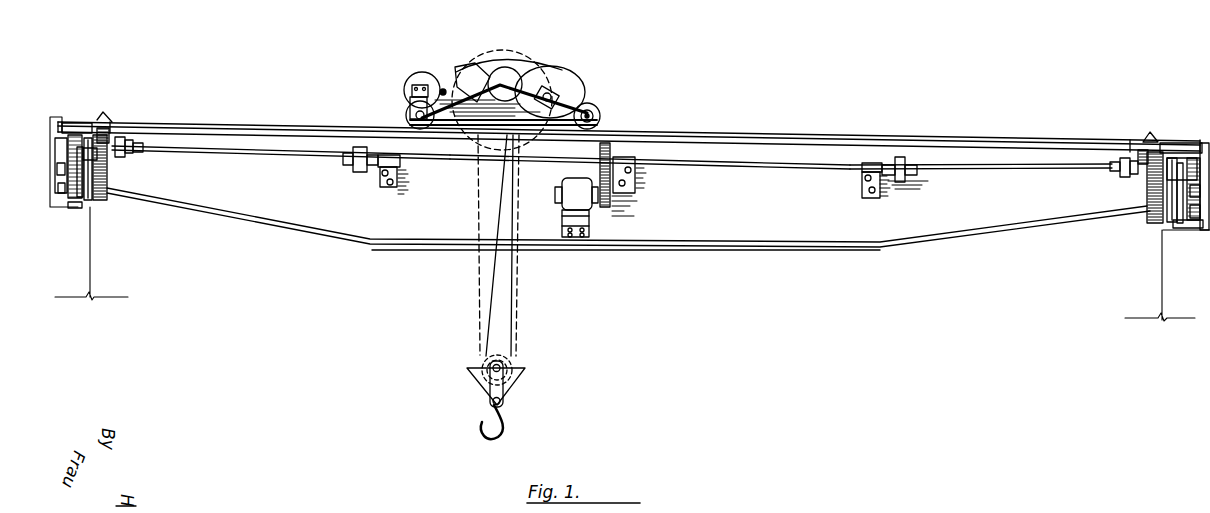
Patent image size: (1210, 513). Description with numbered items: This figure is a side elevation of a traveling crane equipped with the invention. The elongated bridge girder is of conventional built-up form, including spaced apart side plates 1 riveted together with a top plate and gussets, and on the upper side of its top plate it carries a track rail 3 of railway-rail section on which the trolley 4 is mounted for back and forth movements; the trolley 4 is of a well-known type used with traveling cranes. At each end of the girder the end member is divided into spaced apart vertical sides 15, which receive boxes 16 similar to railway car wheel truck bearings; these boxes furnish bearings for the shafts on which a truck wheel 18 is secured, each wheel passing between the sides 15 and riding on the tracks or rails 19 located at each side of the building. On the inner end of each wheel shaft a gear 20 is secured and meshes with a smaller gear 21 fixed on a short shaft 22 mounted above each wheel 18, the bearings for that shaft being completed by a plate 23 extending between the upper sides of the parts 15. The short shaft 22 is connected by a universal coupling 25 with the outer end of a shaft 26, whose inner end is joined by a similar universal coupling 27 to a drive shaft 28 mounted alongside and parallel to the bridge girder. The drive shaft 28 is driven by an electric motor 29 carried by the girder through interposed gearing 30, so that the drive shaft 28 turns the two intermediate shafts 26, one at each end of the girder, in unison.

The side plates 1 is at (702, 233).
The track rail 3 is at (673, 134).
The trolley 4 is at (523, 97).
The vertical sides 15 is at (88, 155).
The boxes 16 is at (88, 193).
The truck wheel 18 is at (83, 198).
The tracks or rails 19 is at (72, 208).
The gear 20 is at (97, 200).
The smaller gear 21 is at (97, 130).
The short shaft 22 is at (110, 132).
The plate 23 is at (80, 132).
The universal coupling 25 is at (132, 150).
The shaft 26 is at (250, 156).
The universal coupling 27 is at (361, 168).
The drive shaft 28 is at (736, 170).
The electric motor 29 is at (568, 212).
The gearing 30 is at (608, 190).